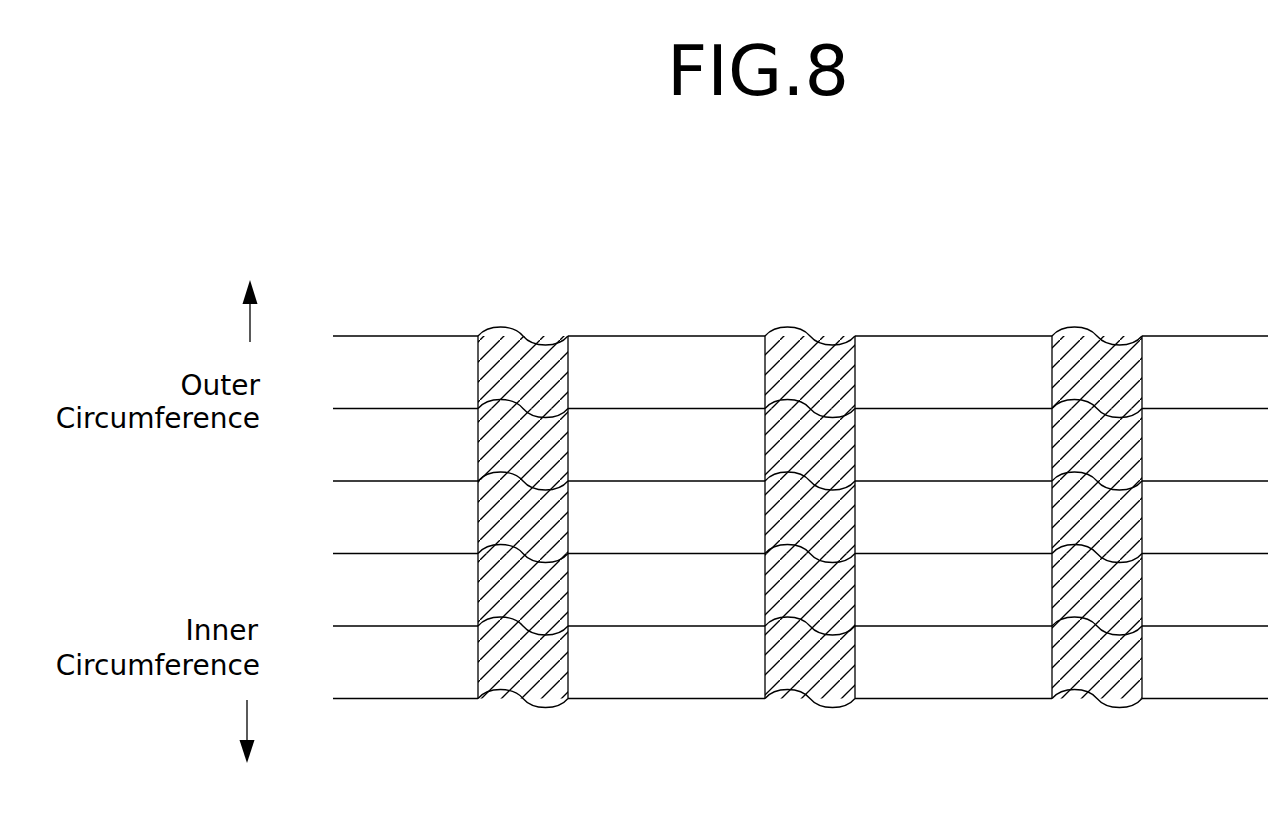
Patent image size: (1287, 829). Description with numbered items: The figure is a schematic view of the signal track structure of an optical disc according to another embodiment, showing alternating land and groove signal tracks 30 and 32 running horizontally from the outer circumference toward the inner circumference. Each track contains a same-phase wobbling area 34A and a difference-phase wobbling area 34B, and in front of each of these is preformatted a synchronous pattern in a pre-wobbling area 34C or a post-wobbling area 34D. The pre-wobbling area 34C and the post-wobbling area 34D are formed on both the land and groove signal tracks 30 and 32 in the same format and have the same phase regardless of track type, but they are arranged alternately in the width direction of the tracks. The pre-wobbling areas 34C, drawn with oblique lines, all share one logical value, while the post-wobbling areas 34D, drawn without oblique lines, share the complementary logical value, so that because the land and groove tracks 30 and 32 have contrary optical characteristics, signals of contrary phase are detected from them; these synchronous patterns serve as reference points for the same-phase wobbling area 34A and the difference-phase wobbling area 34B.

The land signal track 30 is at (788, 508).
The groove signal track 32 is at (788, 517).
The same-phase wobbling area 34A is at (810, 517).
The difference-phase wobbling area 34B is at (810, 517).
The pre-wobbling area 34C is at (810, 517).
The post-wobbling area 34D is at (810, 517).